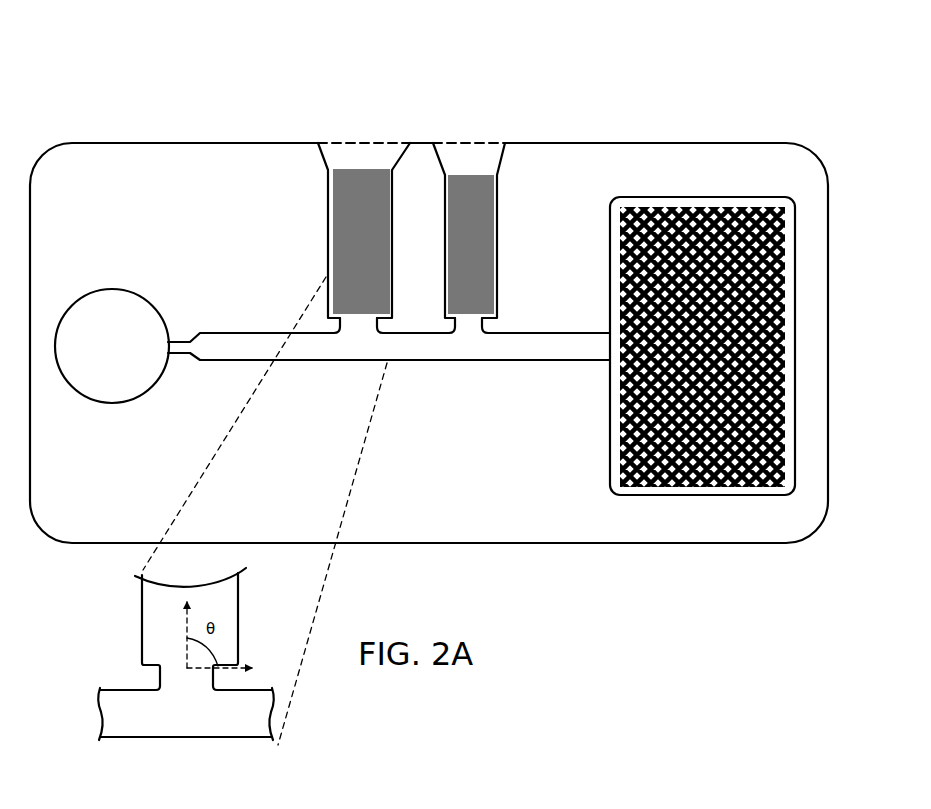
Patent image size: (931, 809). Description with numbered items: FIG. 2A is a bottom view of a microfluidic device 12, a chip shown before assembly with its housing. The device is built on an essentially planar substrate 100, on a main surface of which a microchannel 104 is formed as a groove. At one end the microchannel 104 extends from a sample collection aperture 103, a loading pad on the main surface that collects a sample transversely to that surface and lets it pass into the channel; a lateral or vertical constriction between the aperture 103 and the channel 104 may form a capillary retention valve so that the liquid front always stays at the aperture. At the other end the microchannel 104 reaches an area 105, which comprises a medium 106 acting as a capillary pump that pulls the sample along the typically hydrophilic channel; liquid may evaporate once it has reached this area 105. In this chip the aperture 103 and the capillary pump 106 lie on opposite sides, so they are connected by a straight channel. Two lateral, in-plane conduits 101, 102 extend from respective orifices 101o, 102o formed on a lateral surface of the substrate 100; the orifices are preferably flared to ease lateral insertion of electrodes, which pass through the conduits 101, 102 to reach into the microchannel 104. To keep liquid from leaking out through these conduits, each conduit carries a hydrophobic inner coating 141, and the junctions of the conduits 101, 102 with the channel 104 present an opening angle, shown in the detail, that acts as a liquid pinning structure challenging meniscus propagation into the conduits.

The substrate 100 is at (622, 142).
The microfluidic device 12 is at (716, 560).
The conduit 101 is at (393, 226).
The conduit 102 is at (460, 290).
The orifice 101o is at (396, 167).
The orifice 102o is at (446, 167).
The hydrophobic inner coating 141 is at (352, 178).
The sample collection aperture 103 is at (106, 294).
The microchannel 104 is at (230, 348).
The area 105 is at (800, 276).
The medium 106 is at (782, 376).